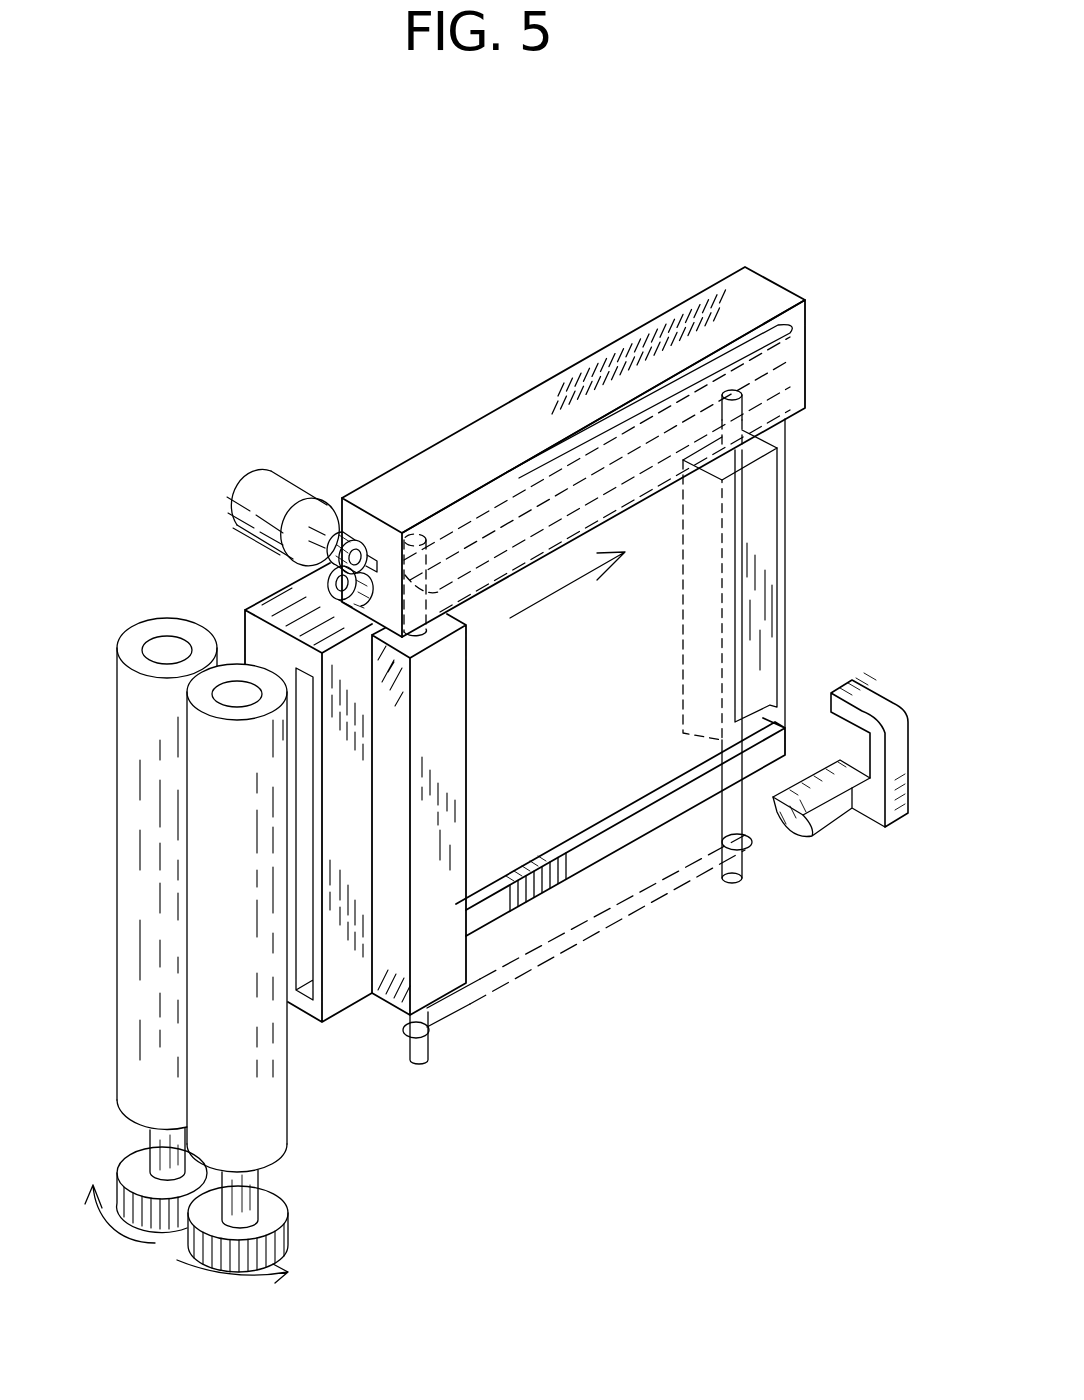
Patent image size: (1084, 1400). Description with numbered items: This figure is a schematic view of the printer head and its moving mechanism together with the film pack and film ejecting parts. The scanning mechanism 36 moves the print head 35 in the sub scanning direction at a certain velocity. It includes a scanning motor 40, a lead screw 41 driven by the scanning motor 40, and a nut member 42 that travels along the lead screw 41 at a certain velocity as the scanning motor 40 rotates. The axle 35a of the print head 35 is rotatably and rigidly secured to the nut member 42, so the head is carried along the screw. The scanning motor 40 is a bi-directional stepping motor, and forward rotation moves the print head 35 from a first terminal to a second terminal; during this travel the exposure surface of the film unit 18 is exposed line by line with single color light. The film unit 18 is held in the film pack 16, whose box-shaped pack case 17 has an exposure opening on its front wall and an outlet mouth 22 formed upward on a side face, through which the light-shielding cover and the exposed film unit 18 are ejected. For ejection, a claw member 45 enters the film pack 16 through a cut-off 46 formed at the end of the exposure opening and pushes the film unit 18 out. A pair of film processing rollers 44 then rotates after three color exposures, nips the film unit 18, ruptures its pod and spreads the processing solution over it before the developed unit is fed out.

The film pack 16 is at (556, 896).
The pack case 17 is at (345, 977).
The film unit 18 is at (538, 764).
The outlet mouth 22 is at (307, 728).
The print head 35 is at (390, 1015).
The axle 35a is at (455, 587).
The scanning mechanism 36 is at (585, 357).
The scanning motor 40 is at (252, 462).
The lead screw 41 is at (505, 478).
The nut member 42 is at (412, 528).
The film processing rollers 44 is at (158, 612).
The claw member 45 is at (878, 836).
The cut-off 46 is at (752, 715).